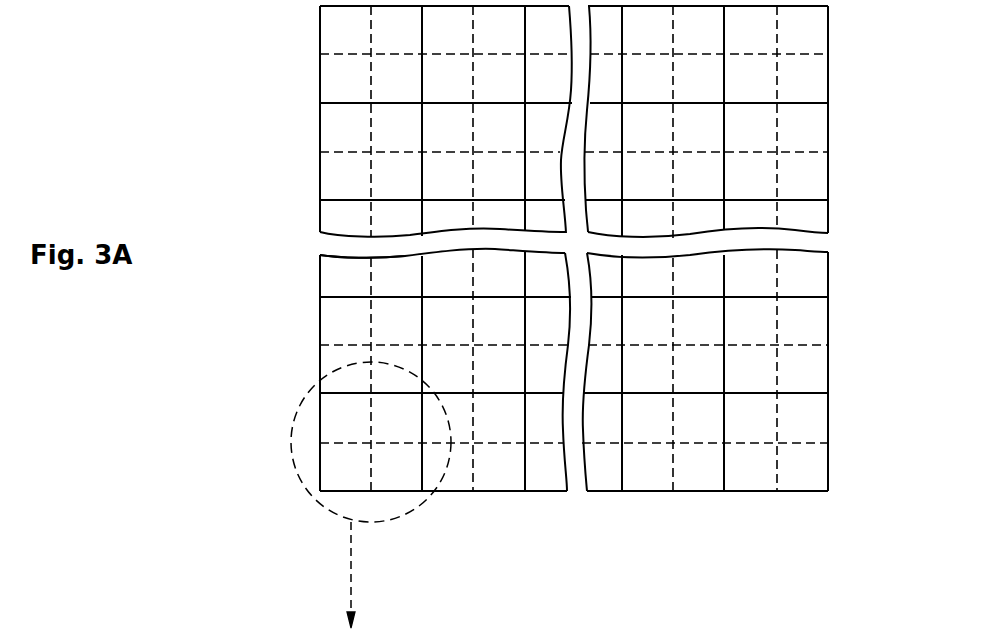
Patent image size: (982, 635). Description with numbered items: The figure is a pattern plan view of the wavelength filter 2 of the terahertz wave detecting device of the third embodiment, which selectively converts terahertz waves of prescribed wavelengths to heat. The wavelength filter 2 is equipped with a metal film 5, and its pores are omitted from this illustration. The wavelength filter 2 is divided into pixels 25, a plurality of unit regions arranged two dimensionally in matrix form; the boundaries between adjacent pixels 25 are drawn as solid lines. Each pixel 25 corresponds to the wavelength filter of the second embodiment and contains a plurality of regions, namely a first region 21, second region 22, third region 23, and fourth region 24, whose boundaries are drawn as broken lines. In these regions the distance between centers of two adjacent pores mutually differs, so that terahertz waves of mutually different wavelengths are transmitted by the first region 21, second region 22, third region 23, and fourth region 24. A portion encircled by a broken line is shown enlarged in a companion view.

The wavelength filter 2 is at (300, 336).
The metal film 5 is at (337, 308).
The first region 21 is at (398, 306).
The second region 22 is at (398, 355).
The third region 23 is at (337, 326).
The fourth region 24 is at (337, 364).
The pixels 25 is at (308, 363).